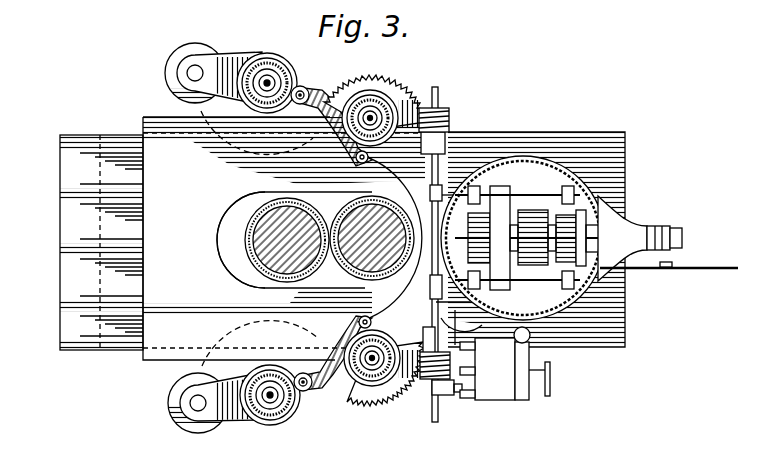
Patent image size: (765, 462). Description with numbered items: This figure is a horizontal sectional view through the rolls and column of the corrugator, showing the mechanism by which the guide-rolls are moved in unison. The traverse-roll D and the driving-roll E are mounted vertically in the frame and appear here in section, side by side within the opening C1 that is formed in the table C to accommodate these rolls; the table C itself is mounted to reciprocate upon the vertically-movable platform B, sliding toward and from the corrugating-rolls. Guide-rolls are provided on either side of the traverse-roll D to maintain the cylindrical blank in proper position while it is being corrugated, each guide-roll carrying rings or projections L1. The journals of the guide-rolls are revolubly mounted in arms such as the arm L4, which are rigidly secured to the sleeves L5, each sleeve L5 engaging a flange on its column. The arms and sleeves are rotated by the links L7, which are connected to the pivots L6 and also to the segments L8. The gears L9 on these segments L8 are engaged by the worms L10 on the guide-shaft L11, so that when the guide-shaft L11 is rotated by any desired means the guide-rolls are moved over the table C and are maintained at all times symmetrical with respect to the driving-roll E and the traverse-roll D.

The platform B is at (68, 167).
The table C is at (300, 238).
The opening C1 is at (224, 217).
The traverse-roll D is at (253, 213).
The driving-roll E is at (372, 227).
The rings or projections L1 is at (201, 54).
The arm L4 is at (229, 417).
The sleeve L5 is at (288, 77).
The pivot L6 is at (309, 389).
The link L7 is at (343, 334).
The segment L8 is at (374, 323).
The gear L9 is at (387, 404).
The worm L10 is at (424, 385).
The guide-shaft L11 is at (436, 93).